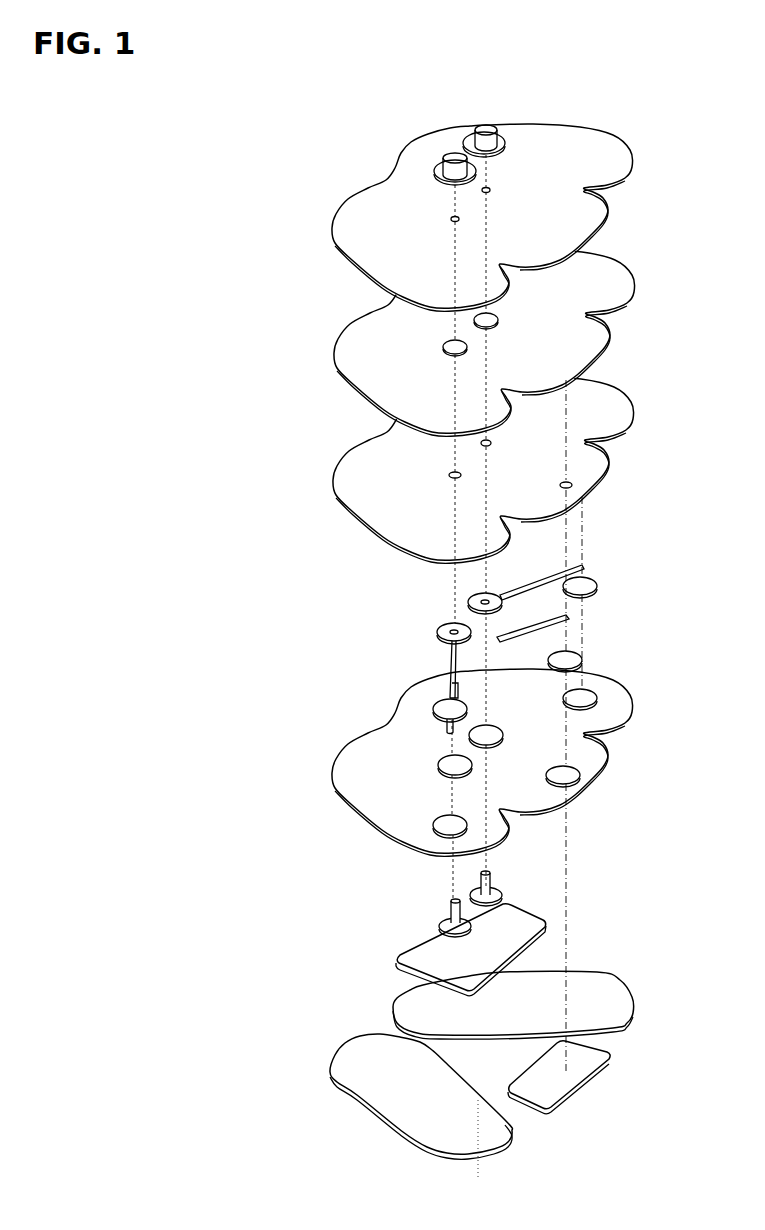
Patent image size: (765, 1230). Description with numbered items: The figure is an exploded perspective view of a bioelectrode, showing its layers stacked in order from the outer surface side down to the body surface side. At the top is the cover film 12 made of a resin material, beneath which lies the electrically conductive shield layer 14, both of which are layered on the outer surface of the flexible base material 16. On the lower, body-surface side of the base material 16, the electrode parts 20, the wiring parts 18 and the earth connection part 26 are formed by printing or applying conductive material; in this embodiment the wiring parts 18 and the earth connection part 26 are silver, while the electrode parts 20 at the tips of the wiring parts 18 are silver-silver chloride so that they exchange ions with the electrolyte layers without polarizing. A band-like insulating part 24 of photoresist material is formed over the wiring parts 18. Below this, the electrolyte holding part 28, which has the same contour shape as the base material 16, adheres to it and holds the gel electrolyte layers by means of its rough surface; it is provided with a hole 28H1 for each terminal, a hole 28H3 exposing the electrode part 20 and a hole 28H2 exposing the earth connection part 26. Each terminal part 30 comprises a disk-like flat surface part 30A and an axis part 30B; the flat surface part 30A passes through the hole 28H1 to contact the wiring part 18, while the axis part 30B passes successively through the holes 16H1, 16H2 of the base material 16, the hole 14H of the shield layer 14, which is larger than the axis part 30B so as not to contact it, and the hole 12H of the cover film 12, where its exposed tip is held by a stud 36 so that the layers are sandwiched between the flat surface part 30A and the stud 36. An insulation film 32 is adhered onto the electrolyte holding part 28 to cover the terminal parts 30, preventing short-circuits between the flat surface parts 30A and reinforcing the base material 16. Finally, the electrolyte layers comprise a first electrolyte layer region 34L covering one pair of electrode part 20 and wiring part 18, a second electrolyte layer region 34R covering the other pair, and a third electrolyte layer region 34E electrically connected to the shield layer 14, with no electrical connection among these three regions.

The cover film 12 is at (582, 208).
The hole 12H is at (452, 222).
The shield layer 14 is at (605, 284).
The hole 14H is at (443, 345).
The base material 16 is at (607, 403).
The hole 16H1 is at (447, 475).
The hole 16H2 is at (573, 482).
The wiring part 18 is at (540, 572).
The electrode part 20 is at (592, 583).
The insulating part 24 is at (573, 622).
The earth connection part 26 is at (575, 658).
The electrolyte holding part 28 is at (617, 692).
The hole 28H1 is at (440, 757).
The hole 28H2 is at (573, 770).
The hole 28H3 is at (440, 823).
The terminal part 30 is at (561, 874).
The flat surface part 30A is at (502, 894).
The axis part 30B is at (491, 880).
The insulation film 32 is at (540, 912).
The first electrolyte layer region 34L is at (603, 993).
The second electrolyte layer region 34R is at (353, 1067).
The third electrolyte layer region 34E is at (587, 1077).
The stud 36 is at (445, 155).